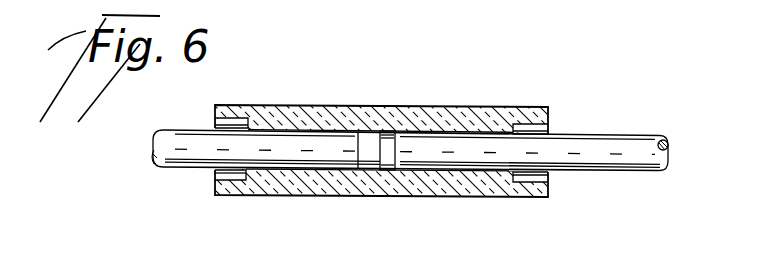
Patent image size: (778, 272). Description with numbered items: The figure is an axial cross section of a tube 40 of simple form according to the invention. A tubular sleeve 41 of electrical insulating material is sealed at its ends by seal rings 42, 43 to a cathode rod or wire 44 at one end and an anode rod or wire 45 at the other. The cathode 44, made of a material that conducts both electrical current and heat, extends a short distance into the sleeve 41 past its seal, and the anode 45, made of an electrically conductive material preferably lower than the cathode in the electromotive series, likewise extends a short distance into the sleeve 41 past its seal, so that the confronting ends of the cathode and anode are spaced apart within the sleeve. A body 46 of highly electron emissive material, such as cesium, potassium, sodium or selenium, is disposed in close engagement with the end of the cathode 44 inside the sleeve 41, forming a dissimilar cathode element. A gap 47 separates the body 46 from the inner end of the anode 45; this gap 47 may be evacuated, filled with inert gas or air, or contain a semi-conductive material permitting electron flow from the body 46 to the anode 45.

The tube 40 is at (385, 105).
The tubular sleeve 41 is at (473, 106).
The seal ring 42 is at (215, 180).
The seal ring 43 is at (548, 176).
The cathode rod or wire 44 is at (185, 168).
The anode rod or wire 45 is at (612, 171).
The body of electron emissive material 46 is at (357, 169).
The gap 47 is at (388, 171).